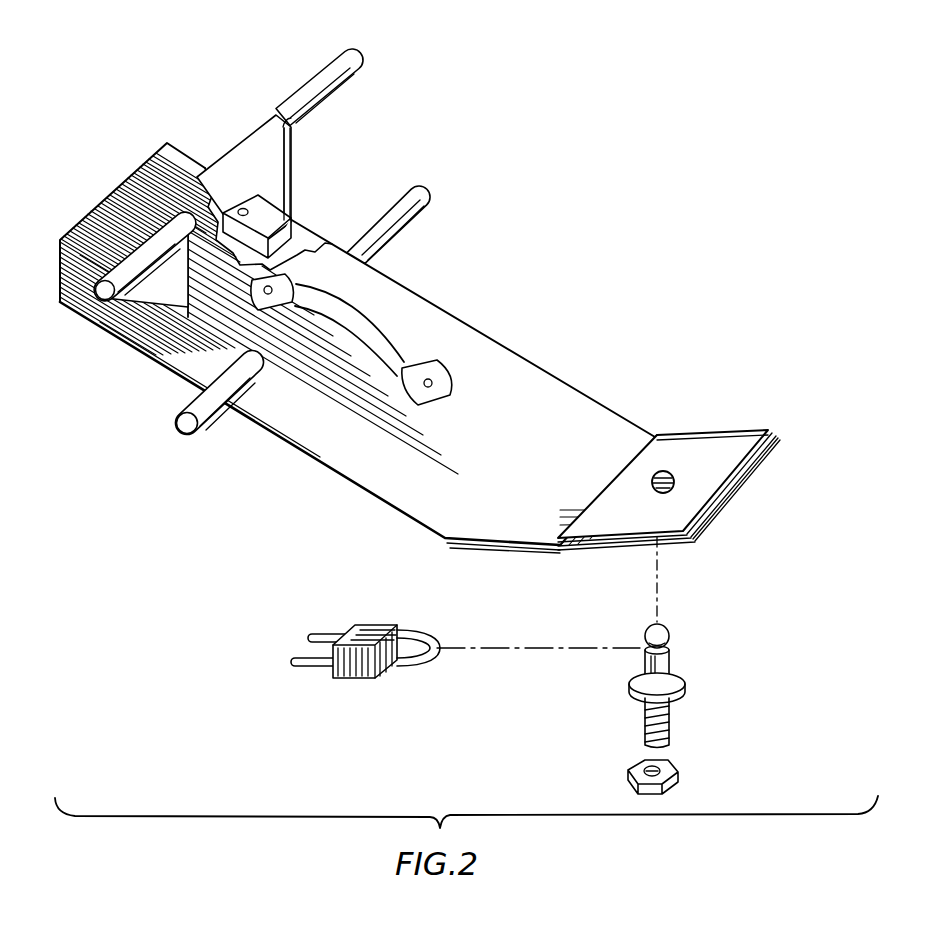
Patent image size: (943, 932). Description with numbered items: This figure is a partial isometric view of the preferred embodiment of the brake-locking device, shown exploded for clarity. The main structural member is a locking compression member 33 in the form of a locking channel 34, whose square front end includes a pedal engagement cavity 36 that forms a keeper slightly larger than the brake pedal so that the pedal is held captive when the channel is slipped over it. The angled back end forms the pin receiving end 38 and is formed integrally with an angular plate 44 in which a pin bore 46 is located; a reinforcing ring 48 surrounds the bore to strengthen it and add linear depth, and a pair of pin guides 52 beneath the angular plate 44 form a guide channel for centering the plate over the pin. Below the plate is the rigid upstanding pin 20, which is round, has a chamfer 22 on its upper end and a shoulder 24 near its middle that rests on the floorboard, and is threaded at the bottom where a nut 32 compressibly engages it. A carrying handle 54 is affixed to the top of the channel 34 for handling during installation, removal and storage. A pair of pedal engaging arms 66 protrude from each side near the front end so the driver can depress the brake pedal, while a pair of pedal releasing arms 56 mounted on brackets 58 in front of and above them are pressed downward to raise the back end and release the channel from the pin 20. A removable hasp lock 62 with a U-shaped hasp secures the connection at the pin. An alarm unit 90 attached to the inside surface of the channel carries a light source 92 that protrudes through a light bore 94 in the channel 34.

The rigid upstanding pin 20 is at (688, 665).
The chamfer 22 is at (654, 624).
The shoulder 24 is at (690, 688).
The nut 32 is at (627, 773).
The locking compression member 33 is at (362, 347).
The locking channel 34 is at (510, 348).
The pedal engagement cavity 36 is at (133, 175).
The pin receiving end 38 is at (708, 457).
The angular plate 44 is at (722, 502).
The pin bore 46 is at (672, 478).
The reinforcing ring 48 is at (727, 492).
The pin guides 52 is at (757, 463).
The carrying handle 54 is at (385, 328).
The pedal releasing arms 56 is at (356, 58).
The brackets 58 is at (240, 143).
The removable hasp lock 62 is at (358, 624).
The pedal engaging arms 66 is at (421, 195).
The alarm unit 90 is at (314, 191).
The light source 92 is at (246, 210).
The light bore 94 is at (286, 212).